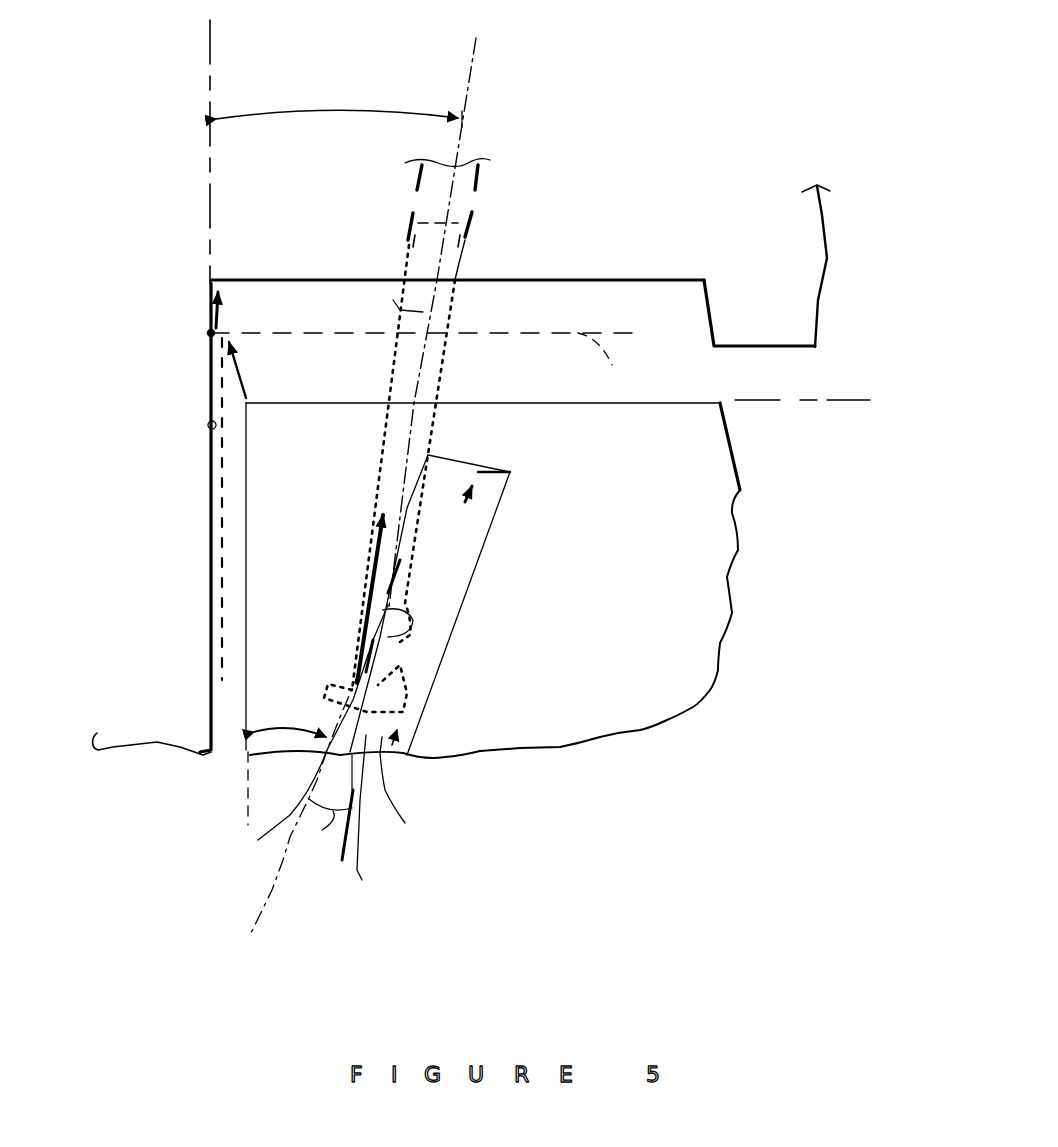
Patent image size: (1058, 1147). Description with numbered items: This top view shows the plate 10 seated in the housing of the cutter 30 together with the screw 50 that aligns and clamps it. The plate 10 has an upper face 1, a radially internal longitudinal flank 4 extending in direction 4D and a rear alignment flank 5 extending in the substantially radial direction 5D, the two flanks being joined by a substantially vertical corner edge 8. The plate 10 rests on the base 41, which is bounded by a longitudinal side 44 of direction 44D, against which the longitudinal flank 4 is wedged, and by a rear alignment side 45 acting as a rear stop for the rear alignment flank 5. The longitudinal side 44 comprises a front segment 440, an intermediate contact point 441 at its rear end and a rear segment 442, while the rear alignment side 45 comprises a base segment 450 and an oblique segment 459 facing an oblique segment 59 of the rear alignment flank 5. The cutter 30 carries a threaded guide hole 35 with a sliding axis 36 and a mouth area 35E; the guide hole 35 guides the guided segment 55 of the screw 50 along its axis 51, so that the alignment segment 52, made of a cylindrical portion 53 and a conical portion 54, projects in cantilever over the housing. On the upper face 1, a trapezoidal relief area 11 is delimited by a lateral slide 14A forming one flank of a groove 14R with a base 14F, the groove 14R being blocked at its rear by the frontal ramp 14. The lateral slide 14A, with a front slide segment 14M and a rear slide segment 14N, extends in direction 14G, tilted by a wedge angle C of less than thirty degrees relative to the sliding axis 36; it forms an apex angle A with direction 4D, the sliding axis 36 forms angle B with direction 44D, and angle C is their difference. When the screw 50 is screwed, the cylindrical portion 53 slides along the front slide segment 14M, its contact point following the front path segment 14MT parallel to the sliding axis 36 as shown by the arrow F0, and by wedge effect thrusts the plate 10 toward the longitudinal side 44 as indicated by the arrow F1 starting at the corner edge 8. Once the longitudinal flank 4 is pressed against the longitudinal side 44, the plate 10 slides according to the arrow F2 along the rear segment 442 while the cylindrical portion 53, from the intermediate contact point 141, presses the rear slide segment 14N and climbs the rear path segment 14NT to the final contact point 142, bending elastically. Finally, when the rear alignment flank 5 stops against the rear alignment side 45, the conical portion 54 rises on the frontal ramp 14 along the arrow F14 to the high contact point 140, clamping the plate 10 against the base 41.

The upper face 1 is at (592, 647).
The radially internal longitudinal flank 4 is at (246, 478).
The direction of extension of the longitudinal flank 4D is at (247, 777).
The rear alignment flank 5 is at (598, 402).
The direction of extension of the rear alignment flank 5D is at (745, 400).
The corner edge 8 is at (246, 403).
The plate 10 is at (707, 690).
The trapezoidal relief area 11 is at (330, 490).
The frontal ramp 14 is at (407, 508).
The lateral slide 14A is at (297, 739).
The base of the groove 14F is at (335, 824).
The direction of extension of the lateral slide 14G is at (268, 903).
The front slide segment 14M is at (357, 602).
The front path segment 14MT is at (357, 618).
The rear slide segment 14N is at (367, 568).
The rear path segment 14NT is at (362, 577).
The groove 14R is at (412, 800).
The cutter 30 is at (164, 173).
The threaded guide hole 35 is at (478, 185).
The mouth area of the guide hole 35E is at (458, 267).
The sliding axis 36 is at (466, 148).
The base 41 is at (785, 377).
The radially internal longitudinal side 44 is at (207, 548).
The direction of extension of the longitudinal side 44D is at (210, 47).
The rear alignment side 45 is at (630, 278).
The screw 50 is at (440, 425).
The axis of the screw body 51 is at (393, 300).
The alignment segment 52 is at (293, 673).
The cylindrical portion 53 is at (326, 684).
The conical portion 54 is at (355, 633).
The guided segment 55 is at (418, 248).
The oblique segment of the rear alignment flank 59 is at (733, 438).
The high contact point 140 is at (510, 472).
The intermediate current contact point 141 is at (405, 580).
The final contact point 142 is at (407, 510).
The front segment of the longitudinal side 440 is at (208, 426).
The intermediate contact point 441 is at (205, 336).
The rear segment of the longitudinal side 442 is at (205, 316).
The base segment of the rear alignment side 450 is at (532, 279).
The oblique segment of the rear alignment side 459 is at (714, 300).
The apex angle A is at (312, 725).
The angle B is at (287, 105).
The wedge angle C is at (328, 827).
The arrow F0 is at (367, 555).
The arrow F1 is at (261, 370).
The arrow F2 is at (246, 310).
The arrow F14 is at (483, 498).